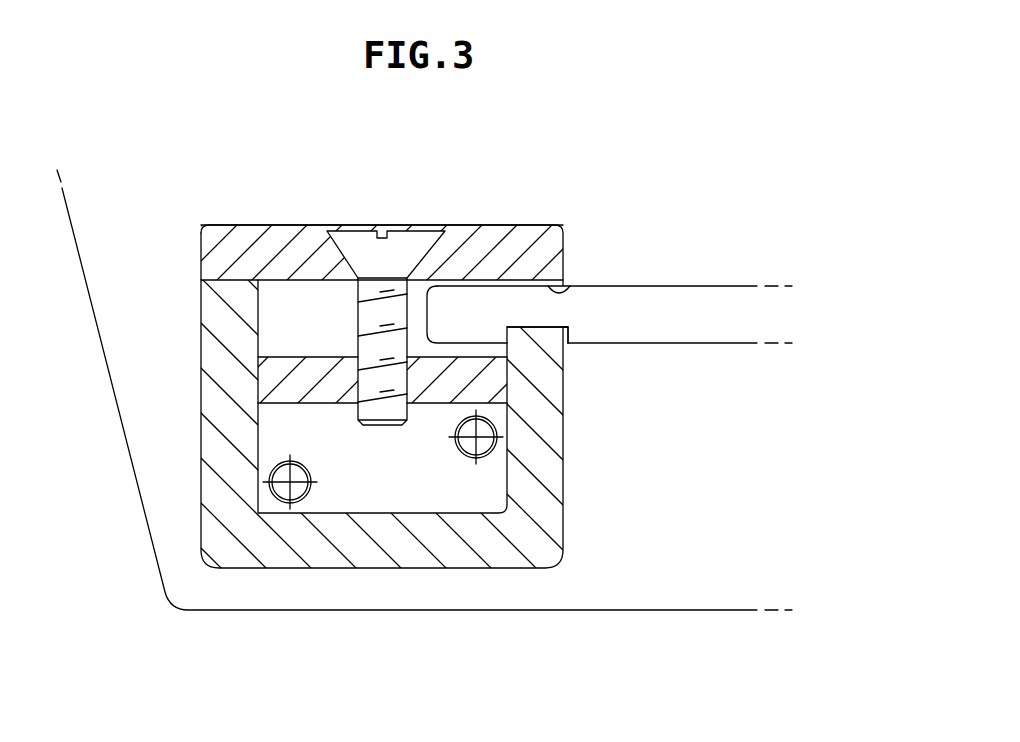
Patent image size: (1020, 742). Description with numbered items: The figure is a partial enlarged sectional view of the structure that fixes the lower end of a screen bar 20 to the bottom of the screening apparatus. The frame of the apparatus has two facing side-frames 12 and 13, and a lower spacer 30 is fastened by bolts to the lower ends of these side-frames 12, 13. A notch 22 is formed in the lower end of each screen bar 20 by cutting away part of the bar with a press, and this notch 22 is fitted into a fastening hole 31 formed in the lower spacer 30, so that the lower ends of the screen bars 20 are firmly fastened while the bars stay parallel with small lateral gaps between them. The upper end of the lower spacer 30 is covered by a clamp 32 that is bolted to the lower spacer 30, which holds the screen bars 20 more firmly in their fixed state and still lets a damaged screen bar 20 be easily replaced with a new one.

The side-frame 12 is at (424, 445).
The side-frame 13 is at (406, 600).
The screen bar 20 is at (684, 287).
The notch 22 is at (560, 320).
The lower spacer 30 is at (553, 432).
The fastening hole 31 is at (571, 285).
The clamp 32 is at (497, 232).